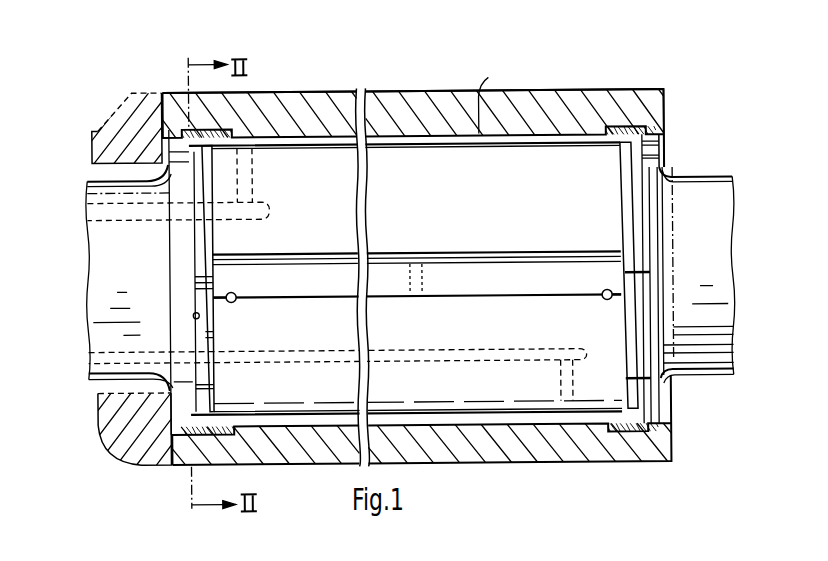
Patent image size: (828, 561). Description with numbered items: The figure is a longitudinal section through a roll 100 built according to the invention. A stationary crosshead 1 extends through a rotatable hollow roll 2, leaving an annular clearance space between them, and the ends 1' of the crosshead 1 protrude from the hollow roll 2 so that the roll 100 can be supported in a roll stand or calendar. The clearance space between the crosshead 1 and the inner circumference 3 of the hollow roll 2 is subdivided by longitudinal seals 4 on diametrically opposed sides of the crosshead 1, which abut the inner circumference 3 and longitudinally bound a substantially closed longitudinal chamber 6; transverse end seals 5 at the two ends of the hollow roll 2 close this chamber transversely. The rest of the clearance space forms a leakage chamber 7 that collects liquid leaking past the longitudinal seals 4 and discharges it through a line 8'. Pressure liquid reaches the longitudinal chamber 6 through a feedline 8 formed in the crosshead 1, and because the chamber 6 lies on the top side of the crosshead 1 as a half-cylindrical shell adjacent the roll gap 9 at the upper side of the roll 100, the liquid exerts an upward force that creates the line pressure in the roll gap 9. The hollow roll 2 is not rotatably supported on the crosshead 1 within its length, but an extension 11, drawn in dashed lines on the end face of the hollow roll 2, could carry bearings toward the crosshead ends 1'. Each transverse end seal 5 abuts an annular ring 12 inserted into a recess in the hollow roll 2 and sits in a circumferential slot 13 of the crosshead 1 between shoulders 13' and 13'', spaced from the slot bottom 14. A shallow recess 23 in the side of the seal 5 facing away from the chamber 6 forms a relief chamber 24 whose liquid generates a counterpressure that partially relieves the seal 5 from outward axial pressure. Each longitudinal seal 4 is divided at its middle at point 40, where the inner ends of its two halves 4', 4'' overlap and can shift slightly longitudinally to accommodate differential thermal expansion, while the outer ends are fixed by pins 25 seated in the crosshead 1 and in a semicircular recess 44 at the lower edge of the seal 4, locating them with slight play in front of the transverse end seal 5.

The roll 100 is at (613, 77).
The crosshead 1 is at (417, 278).
The ends of the crosshead 1' is at (411, 275).
The hollow roll 2 is at (536, 100).
The inner circumference 3 is at (446, 147).
The longitudinal seal 4 is at (417, 320).
The half of the longitudinal seal 4' is at (285, 230).
The half of the longitudinal seal 4'' is at (493, 221).
The transverse end seal 5 is at (218, 237).
The longitudinal chamber 6 is at (489, 96).
The leakage chamber 7 is at (521, 427).
The feedline 8 is at (191, 184).
The line 8' is at (337, 352).
The roll gap 9 is at (670, 86).
The extension 11 is at (142, 443).
The annular ring 12 is at (215, 122).
The circumferential slot 13 is at (413, 320).
The slot shoulder 13' is at (167, 304).
The slot shoulder 13'' is at (232, 327).
The slot bottom 14 is at (196, 392).
The shallow recess 23 is at (163, 93).
The relief chamber 24 is at (190, 232).
The pin 25 is at (236, 301).
The dividing point 40 is at (413, 244).
The semicircular recess 44 is at (235, 293).